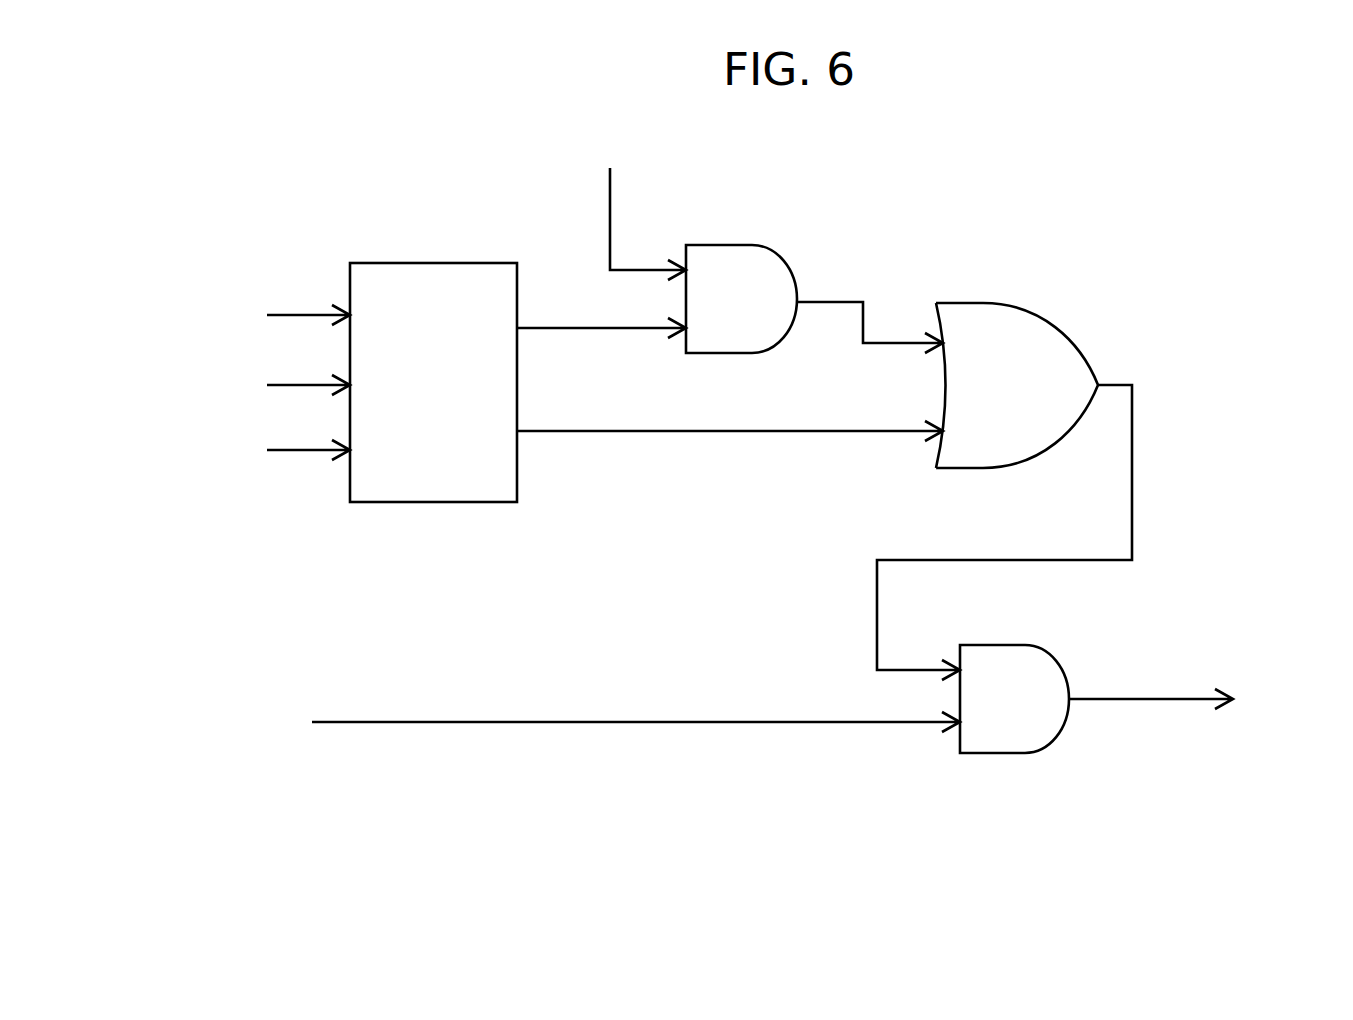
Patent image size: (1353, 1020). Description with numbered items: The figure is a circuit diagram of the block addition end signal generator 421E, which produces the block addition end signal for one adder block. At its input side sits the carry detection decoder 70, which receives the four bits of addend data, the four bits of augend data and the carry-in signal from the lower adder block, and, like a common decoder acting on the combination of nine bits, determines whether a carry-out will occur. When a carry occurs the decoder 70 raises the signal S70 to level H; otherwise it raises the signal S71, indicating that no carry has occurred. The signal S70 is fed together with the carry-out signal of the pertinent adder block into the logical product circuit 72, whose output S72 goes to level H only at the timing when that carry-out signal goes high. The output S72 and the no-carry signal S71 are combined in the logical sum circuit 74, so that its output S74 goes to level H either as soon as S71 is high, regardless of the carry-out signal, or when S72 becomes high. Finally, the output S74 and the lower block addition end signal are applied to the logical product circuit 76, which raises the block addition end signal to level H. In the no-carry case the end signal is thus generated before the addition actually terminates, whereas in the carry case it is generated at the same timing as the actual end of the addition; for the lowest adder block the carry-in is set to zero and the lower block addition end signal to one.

The carry detection decoder 70 is at (433, 366).
The logical product circuit 72 is at (741, 280).
The logical sum circuit 74 is at (1017, 367).
The logical product circuit 76 is at (1014, 683).
The block addition end signal generator 421E is at (892, 222).
The carry signal S70 is at (601, 328).
The no-carry signal S71 is at (730, 422).
The output of the AND circuit S72 is at (870, 309).
The output of the OR circuit S74 is at (1034, 532).